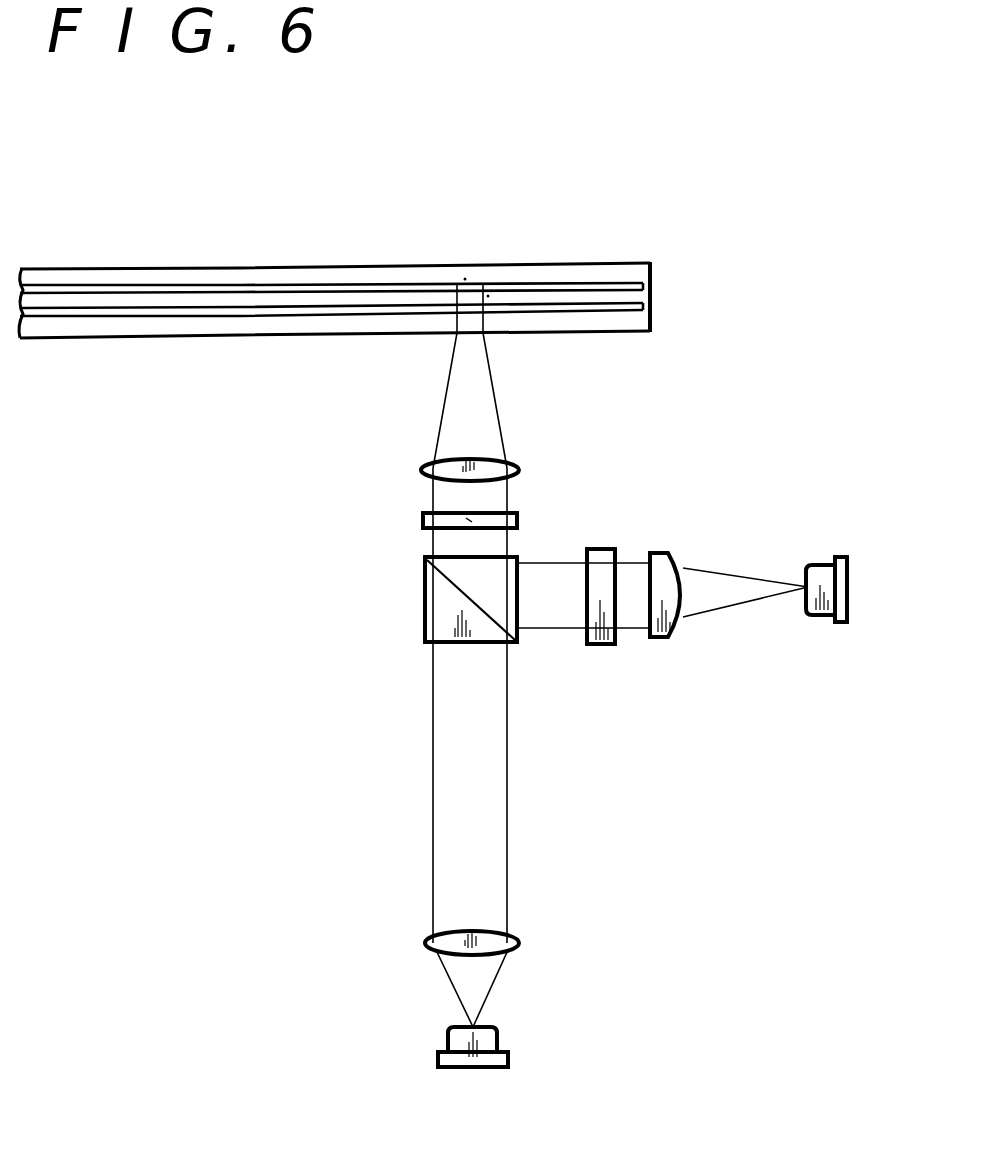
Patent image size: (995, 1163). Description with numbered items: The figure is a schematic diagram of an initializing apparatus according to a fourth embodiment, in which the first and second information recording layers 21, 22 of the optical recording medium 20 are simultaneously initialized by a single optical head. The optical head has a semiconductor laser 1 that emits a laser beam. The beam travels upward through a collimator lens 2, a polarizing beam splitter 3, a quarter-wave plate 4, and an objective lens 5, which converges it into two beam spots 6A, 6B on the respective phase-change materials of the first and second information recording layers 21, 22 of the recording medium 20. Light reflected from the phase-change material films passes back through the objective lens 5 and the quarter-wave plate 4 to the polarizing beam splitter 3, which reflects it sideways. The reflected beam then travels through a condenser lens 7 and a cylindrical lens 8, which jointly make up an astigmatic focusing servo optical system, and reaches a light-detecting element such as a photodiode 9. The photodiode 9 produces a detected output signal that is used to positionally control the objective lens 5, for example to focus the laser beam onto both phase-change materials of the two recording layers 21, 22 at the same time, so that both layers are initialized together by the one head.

The semiconductor laser 1 is at (497, 1035).
The collimator lens 2 is at (519, 940).
The polarizing beam splitter 3 is at (515, 640).
The quarter-wave plate 4 is at (518, 513).
The objective lens 5 is at (515, 462).
The beam spot 6A is at (483, 292).
The beam spot 6B is at (465, 277).
The condenser lens 7 is at (602, 645).
The cylindrical lens 8 is at (665, 553).
The photodiode 9 is at (817, 614).
The optical recording medium 20 is at (610, 318).
The first information recording layer 21 is at (627, 297).
The second information recording layer 22 is at (622, 275).